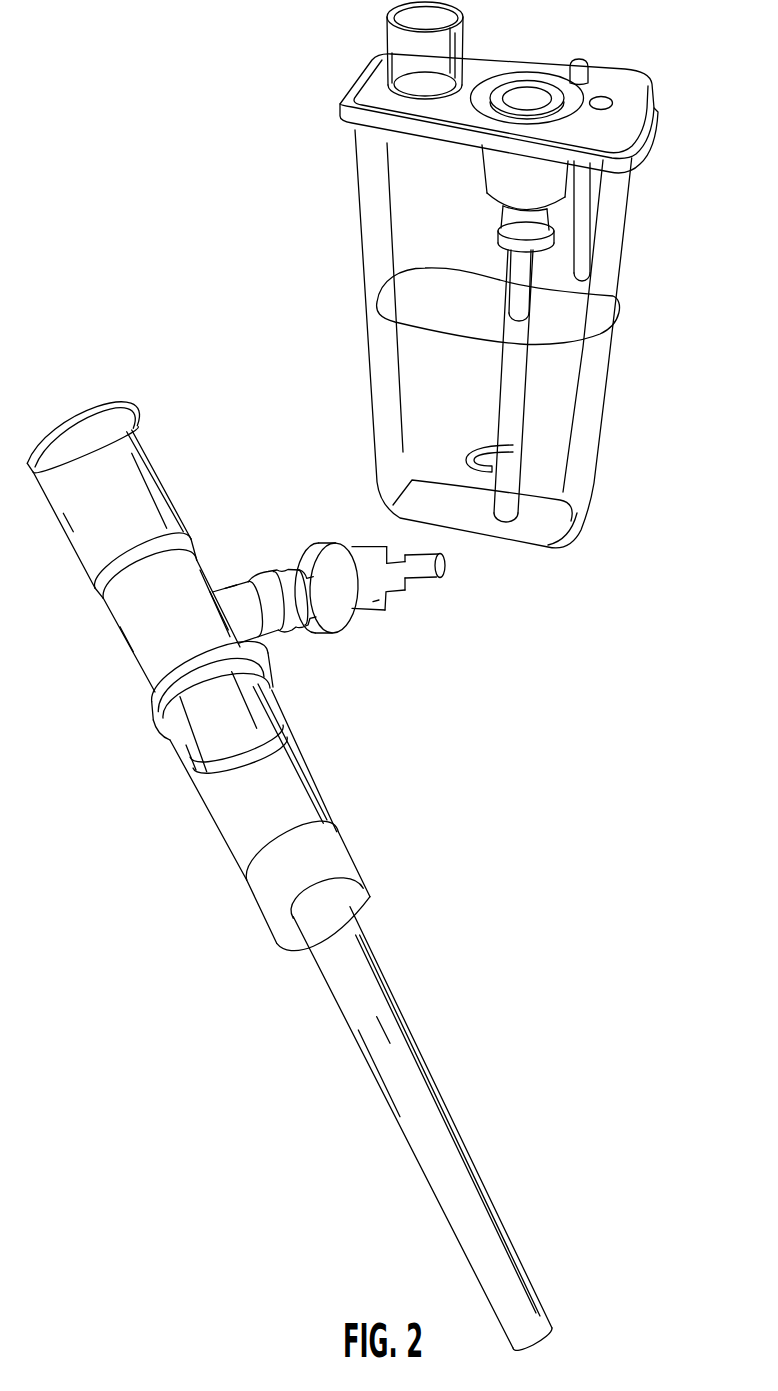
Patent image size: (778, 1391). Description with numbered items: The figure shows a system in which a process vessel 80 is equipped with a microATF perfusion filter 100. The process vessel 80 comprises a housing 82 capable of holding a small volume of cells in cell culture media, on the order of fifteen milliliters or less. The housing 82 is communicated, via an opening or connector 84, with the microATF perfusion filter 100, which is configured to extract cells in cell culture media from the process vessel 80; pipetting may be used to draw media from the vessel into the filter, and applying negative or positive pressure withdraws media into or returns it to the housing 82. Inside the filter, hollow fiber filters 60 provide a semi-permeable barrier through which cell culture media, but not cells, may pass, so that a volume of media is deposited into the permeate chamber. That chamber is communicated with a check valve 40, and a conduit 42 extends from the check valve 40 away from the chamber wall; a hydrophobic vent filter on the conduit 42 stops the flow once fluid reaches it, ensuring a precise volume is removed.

The process vessel 80 is at (544, 275).
The housing 82 is at (623, 361).
The connector 84 is at (529, 79).
The microATF perfusion filter 100 is at (294, 876).
The check valve 40 is at (357, 609).
The conduit 42 is at (423, 574).
The hollow fiber filters 60 is at (378, 1101).